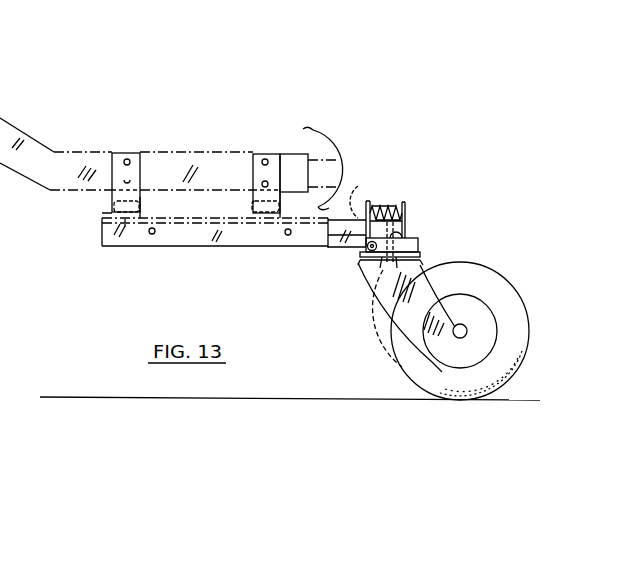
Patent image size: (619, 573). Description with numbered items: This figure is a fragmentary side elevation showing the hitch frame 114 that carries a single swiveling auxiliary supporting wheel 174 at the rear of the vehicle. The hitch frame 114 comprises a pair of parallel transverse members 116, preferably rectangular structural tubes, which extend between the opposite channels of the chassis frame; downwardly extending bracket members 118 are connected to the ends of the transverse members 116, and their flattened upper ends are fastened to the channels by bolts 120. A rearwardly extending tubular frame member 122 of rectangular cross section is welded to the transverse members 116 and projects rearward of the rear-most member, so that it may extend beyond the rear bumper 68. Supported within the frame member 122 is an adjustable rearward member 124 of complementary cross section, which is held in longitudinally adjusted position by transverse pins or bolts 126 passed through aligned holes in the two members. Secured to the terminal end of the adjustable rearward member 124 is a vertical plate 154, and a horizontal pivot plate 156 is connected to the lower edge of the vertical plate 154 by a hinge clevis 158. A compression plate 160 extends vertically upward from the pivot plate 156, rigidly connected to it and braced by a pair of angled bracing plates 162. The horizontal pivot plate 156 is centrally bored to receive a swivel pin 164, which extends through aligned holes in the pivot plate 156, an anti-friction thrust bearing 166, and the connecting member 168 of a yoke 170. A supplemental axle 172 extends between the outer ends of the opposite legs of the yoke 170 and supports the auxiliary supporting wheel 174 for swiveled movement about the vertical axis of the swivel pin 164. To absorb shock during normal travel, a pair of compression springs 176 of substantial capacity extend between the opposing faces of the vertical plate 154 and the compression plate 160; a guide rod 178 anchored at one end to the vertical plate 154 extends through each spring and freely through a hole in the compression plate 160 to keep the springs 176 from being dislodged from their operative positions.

The rear bumper 68 is at (339, 150).
The hitch frame 114 is at (204, 252).
The transverse members 116 is at (102, 216).
The bracket members 118 is at (116, 198).
The bolts 120 is at (127, 159).
The frame member 122 is at (180, 247).
The adjustable rearward member 124 is at (343, 230).
The transverse pins or bolts 126 is at (153, 228).
The vertical plate 154 is at (369, 201).
The horizontal pivot plate 156 is at (412, 242).
The hinge clevis 158 is at (370, 249).
The compression plate 160 is at (405, 204).
The angled bracing plates 162 is at (394, 227).
The swivel pin 164 is at (380, 290).
The anti-friction thrust bearing 166 is at (420, 255).
The connecting member 168 is at (386, 313).
The yoke 170 is at (412, 315).
The supplemental axle 172 is at (460, 324).
The auxiliary supporting wheel 174 is at (503, 292).
The compression springs 176 is at (388, 207).
The guide rod 178 is at (362, 189).